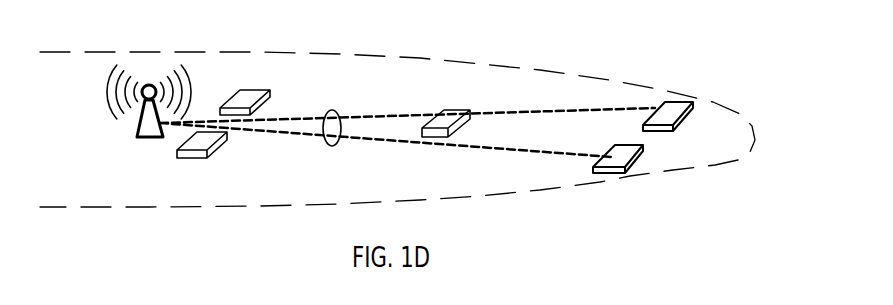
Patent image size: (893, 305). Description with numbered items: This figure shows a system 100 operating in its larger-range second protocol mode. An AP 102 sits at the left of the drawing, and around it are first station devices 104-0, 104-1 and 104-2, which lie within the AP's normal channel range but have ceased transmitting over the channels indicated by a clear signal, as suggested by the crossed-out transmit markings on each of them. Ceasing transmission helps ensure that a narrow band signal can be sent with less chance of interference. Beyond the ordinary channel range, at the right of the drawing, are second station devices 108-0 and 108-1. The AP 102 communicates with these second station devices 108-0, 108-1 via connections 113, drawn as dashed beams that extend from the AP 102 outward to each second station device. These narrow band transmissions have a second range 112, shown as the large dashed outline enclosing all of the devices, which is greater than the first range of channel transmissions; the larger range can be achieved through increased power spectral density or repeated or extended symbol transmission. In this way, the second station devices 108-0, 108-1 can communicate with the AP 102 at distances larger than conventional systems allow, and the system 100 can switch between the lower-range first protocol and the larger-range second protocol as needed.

The system 100 is at (690, 65).
The AP 102 is at (145, 103).
The first station device 104-0 is at (191, 152).
The first station device 104-1 is at (450, 110).
The first station device 104-2 is at (247, 92).
The second station device 108-0 is at (631, 167).
The second station device 108-1 is at (686, 122).
The second range 112 is at (720, 153).
The connections 113 is at (340, 111).